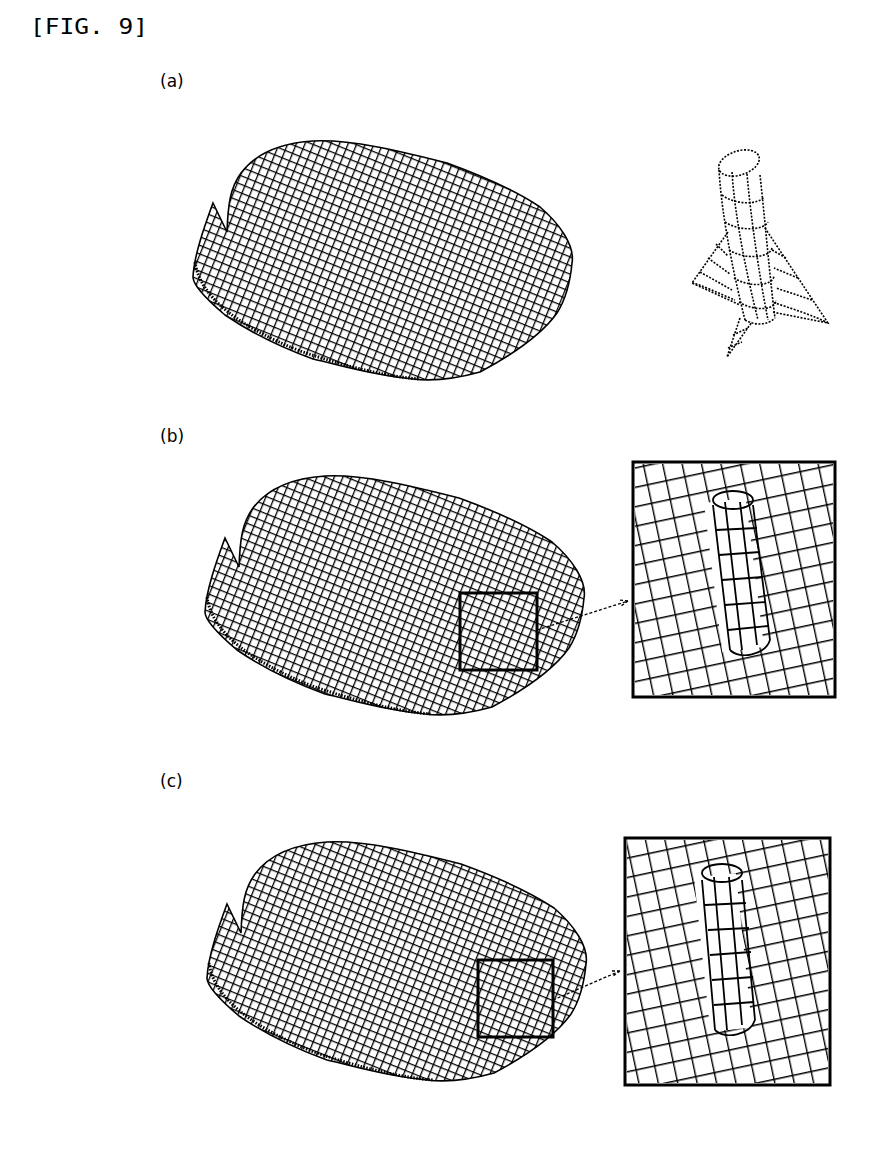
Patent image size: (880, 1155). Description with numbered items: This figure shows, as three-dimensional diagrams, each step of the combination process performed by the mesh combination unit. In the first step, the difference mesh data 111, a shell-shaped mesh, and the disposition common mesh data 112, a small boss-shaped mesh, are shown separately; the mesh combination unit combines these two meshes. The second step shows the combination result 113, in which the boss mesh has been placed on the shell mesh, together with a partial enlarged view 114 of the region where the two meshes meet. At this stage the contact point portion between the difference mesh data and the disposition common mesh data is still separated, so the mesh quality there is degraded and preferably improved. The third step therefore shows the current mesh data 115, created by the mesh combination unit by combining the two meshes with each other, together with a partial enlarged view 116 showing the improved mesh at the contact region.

The difference mesh data 111 is at (460, 166).
The disposition common mesh data 112 is at (765, 170).
The combination result 113 is at (456, 496).
The partial enlarged view of combination result 114 is at (766, 462).
The current mesh data 115 is at (478, 876).
The partial enlarged view of current mesh data 116 is at (767, 840).